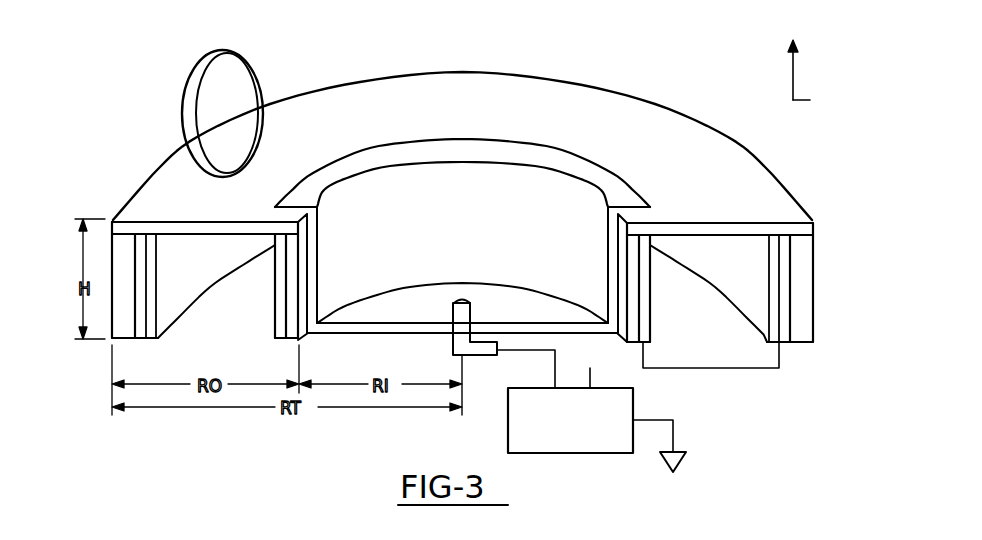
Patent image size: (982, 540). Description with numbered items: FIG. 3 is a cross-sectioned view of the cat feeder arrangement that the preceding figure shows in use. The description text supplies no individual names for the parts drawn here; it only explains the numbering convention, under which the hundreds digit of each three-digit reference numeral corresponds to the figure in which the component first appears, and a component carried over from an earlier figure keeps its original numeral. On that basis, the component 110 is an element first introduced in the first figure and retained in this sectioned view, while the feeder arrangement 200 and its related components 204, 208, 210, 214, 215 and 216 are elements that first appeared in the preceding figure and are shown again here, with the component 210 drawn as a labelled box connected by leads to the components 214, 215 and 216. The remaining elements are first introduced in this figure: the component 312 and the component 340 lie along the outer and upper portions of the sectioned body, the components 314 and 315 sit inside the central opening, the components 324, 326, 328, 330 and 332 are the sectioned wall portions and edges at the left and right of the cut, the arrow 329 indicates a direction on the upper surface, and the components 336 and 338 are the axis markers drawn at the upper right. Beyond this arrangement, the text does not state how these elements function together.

The coil ring 110 is at (247, 52).
The toroidal sensor housing 200 is at (131, 175).
The inner bore 204 is at (597, 166).
The wiring 208 is at (735, 368).
The electronic subsystem 210 is at (634, 398).
The ground lead 214 is at (675, 432).
The ground 215 is at (682, 455).
The sensor lead 216 is at (556, 360).
The outer cylindrical surface 312 is at (778, 160).
The sensor 314 is at (470, 307).
The sensor mount 315 is at (452, 320).
The outer wall 324 is at (121, 345).
The liner 326 is at (140, 340).
The inner surface edge 328 is at (172, 322).
The rotation direction 329 is at (258, 201).
The inner wall 330 is at (283, 340).
The bore wall 332 is at (290, 343).
The axis 336 is at (795, 73).
The axis 338 is at (800, 101).
The top surface 340 is at (670, 192).